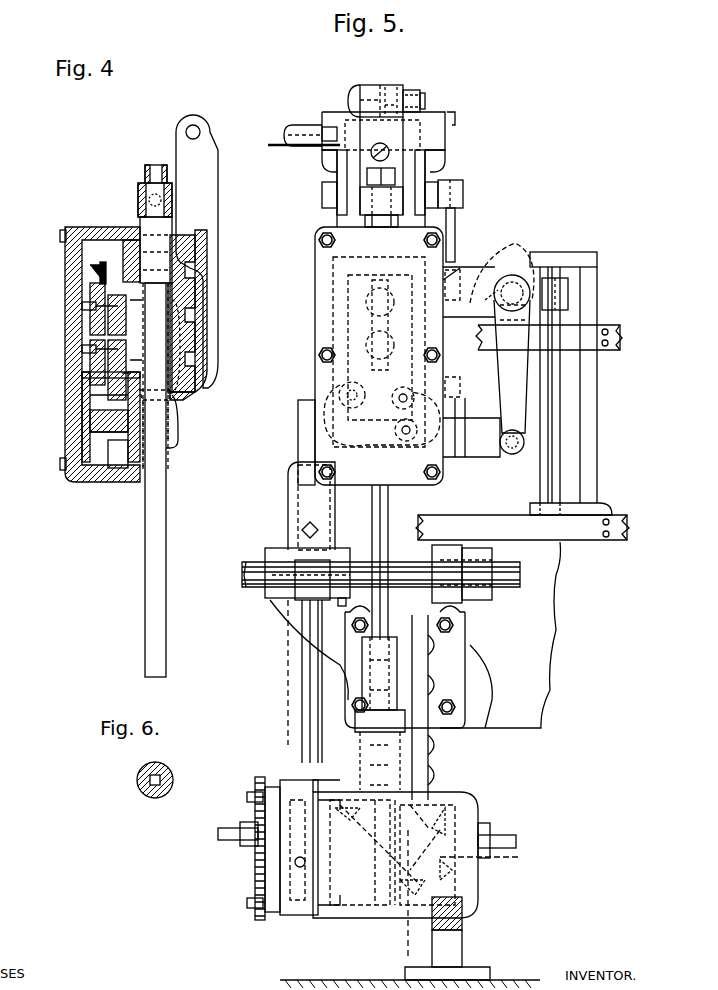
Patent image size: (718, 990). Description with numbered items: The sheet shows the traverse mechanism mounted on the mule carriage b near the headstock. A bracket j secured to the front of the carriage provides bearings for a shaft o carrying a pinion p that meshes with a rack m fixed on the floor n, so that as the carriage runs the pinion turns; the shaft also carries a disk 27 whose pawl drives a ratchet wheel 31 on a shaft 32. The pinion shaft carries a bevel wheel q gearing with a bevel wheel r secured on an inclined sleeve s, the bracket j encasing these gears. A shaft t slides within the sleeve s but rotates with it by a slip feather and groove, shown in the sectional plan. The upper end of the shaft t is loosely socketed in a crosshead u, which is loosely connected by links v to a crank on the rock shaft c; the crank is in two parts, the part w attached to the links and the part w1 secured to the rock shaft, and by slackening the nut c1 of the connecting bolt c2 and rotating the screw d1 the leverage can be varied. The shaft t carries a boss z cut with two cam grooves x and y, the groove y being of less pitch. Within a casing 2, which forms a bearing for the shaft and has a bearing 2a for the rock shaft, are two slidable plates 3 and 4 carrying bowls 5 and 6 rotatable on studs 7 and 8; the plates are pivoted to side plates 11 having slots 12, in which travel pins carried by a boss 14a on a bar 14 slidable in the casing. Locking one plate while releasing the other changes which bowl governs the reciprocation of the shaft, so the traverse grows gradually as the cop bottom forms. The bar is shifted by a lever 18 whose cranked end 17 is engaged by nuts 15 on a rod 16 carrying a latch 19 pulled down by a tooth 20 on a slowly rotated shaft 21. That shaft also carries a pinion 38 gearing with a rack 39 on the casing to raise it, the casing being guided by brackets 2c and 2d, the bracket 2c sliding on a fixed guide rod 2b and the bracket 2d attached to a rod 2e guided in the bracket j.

In FIG. 4, the casing 2 is at (70, 425).
In FIG. 5, the casing 2 is at (318, 345).
In FIG. 4, the bearing 2a is at (196, 114).
In FIG. 5, the fixed guide rod 2b is at (545, 480).
In FIG. 5, the bracket 2c is at (560, 278).
In FIG. 5, the bracket 2d is at (281, 515).
In FIG. 5, the rod 2e is at (305, 670).
In FIG. 4, the plate 3 is at (110, 358).
In FIG. 4, the plate 4 is at (90, 290).
In FIG. 4, the bowl 5 is at (100, 348).
In FIG. 4, the bowl 6 is at (122, 310).
In FIG. 4, the stud 7 is at (112, 342).
In FIG. 4, the stud 8 is at (85, 295).
In FIG. 4, the side plates 11 is at (92, 400).
In FIG. 5, the side plates 11 is at (340, 392).
In FIG. 4, the slots 12 is at (72, 440).
In FIG. 5, the slots 12 is at (330, 426).
In FIG. 4, the bar 14 is at (116, 470).
In FIG. 5, the bar 14 is at (486, 428).
In FIG. 5, the boss 14a is at (460, 418).
In FIG. 5, the nuts 15 is at (465, 270).
In FIG. 5, the rod 16 is at (456, 233).
In FIG. 5, the cranked end 17 is at (520, 252).
In FIG. 5, the lever 18 is at (506, 364).
In FIG. 5, the latch 19 is at (440, 483).
In FIG. 5, the tooth 20 is at (447, 545).
In FIG. 5, the shaft 21 is at (242, 574).
In FIG. 5, the disk 27 is at (262, 853).
In FIG. 5, the ratchet wheel 31 is at (255, 880).
In FIG. 5, the shaft 32 is at (506, 832).
In FIG. 5, the pinion 38 is at (305, 593).
In FIG. 5, the rack 39 is at (300, 452).
In FIG. 5, the mule carriage b is at (500, 635).
In FIG. 5, the rock shaft c is at (294, 128).
In FIG. 5, the nut c1 is at (426, 97).
In FIG. 5, the connecting bolt c2 is at (355, 92).
In FIG. 5, the screw d1 is at (370, 156).
In FIG. 5, the bracket j is at (463, 692).
In FIG. 5, the rack m is at (462, 925).
In FIG. 5, the floor n is at (302, 978).
In FIG. 5, the shaft o is at (488, 857).
In FIG. 5, the pinion p is at (450, 888).
In FIG. 5, the bevel wheel q is at (405, 895).
In FIG. 5, the bevel wheel r is at (425, 800).
In FIG. 5, the sleeve s is at (365, 690).
In FIG. 6, the sleeve s is at (137, 779).
In FIG. 4, the shaft t is at (158, 443).
In FIG. 5, the shaft t is at (375, 530).
In FIG. 6, the shaft t is at (170, 774).
In FIG. 4, the crosshead u is at (136, 200).
In FIG. 5, the crosshead u is at (350, 211).
In FIG. 5, the links v is at (352, 186).
In FIG. 5, the crank w is at (395, 100).
In FIG. 5, the crank part w1 is at (368, 84).
In FIG. 4, the cam groove x is at (188, 297).
In FIG. 4, the cam groove y is at (182, 344).
In FIG. 4, the boss z is at (182, 338).